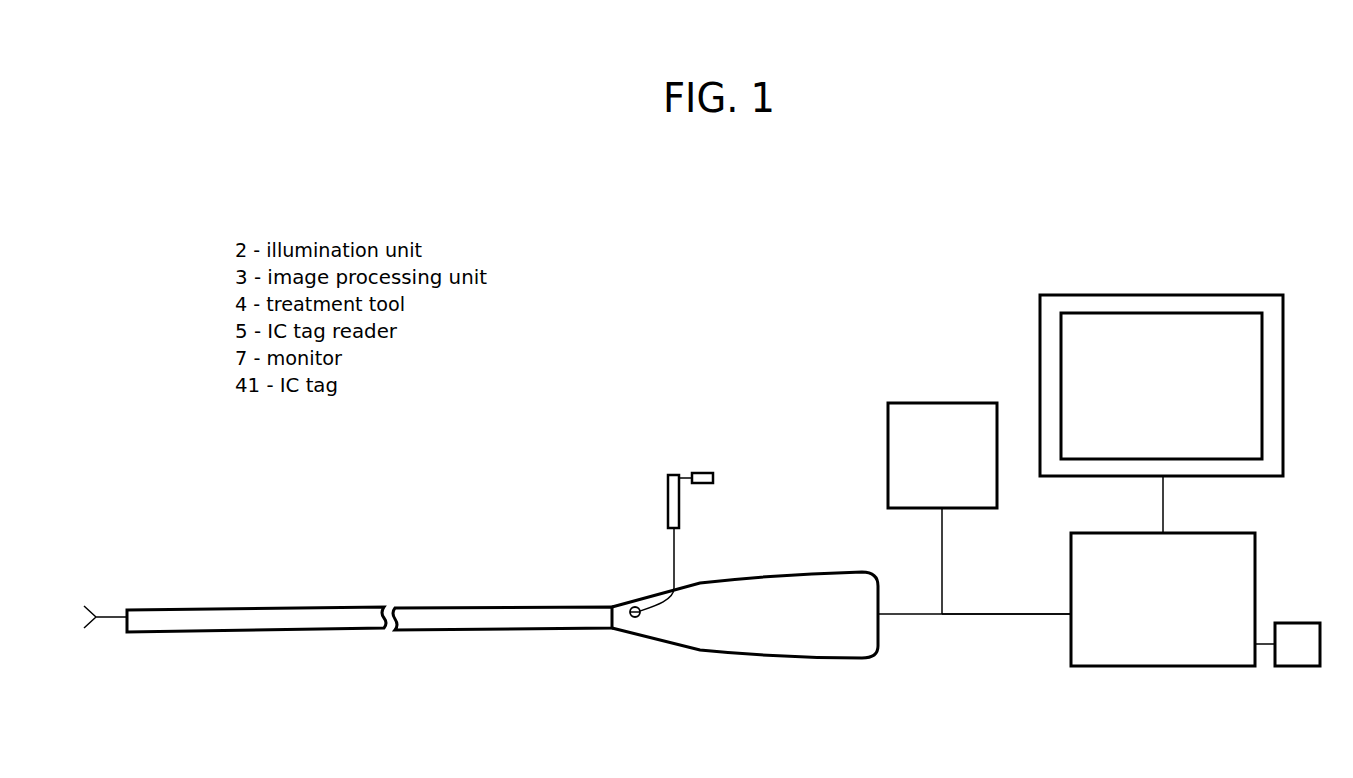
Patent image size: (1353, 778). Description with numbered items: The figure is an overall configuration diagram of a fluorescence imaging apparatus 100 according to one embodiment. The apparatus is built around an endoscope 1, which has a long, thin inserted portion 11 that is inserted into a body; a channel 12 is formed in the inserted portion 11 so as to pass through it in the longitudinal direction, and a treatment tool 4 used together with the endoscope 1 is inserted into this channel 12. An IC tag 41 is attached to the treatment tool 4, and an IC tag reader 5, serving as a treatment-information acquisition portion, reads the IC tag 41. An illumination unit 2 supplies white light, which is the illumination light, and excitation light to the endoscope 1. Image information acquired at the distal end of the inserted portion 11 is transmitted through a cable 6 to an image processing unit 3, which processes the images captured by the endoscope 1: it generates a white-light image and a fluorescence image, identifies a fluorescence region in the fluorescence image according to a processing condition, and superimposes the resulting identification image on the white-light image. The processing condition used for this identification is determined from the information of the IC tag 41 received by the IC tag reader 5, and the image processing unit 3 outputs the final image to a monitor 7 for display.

The fluorescence imaging apparatus 100 is at (812, 426).
The endoscope 1 is at (797, 572).
The inserted portion 11 is at (485, 607).
The channel 12 is at (636, 618).
The illumination unit 2 is at (937, 402).
The image processing unit 3 is at (1186, 667).
The treatment tool 4 is at (668, 495).
The IC tag 41 is at (702, 472).
The IC tag reader 5 is at (1296, 623).
The cable 6 is at (1013, 617).
The monitor 7 is at (1160, 294).